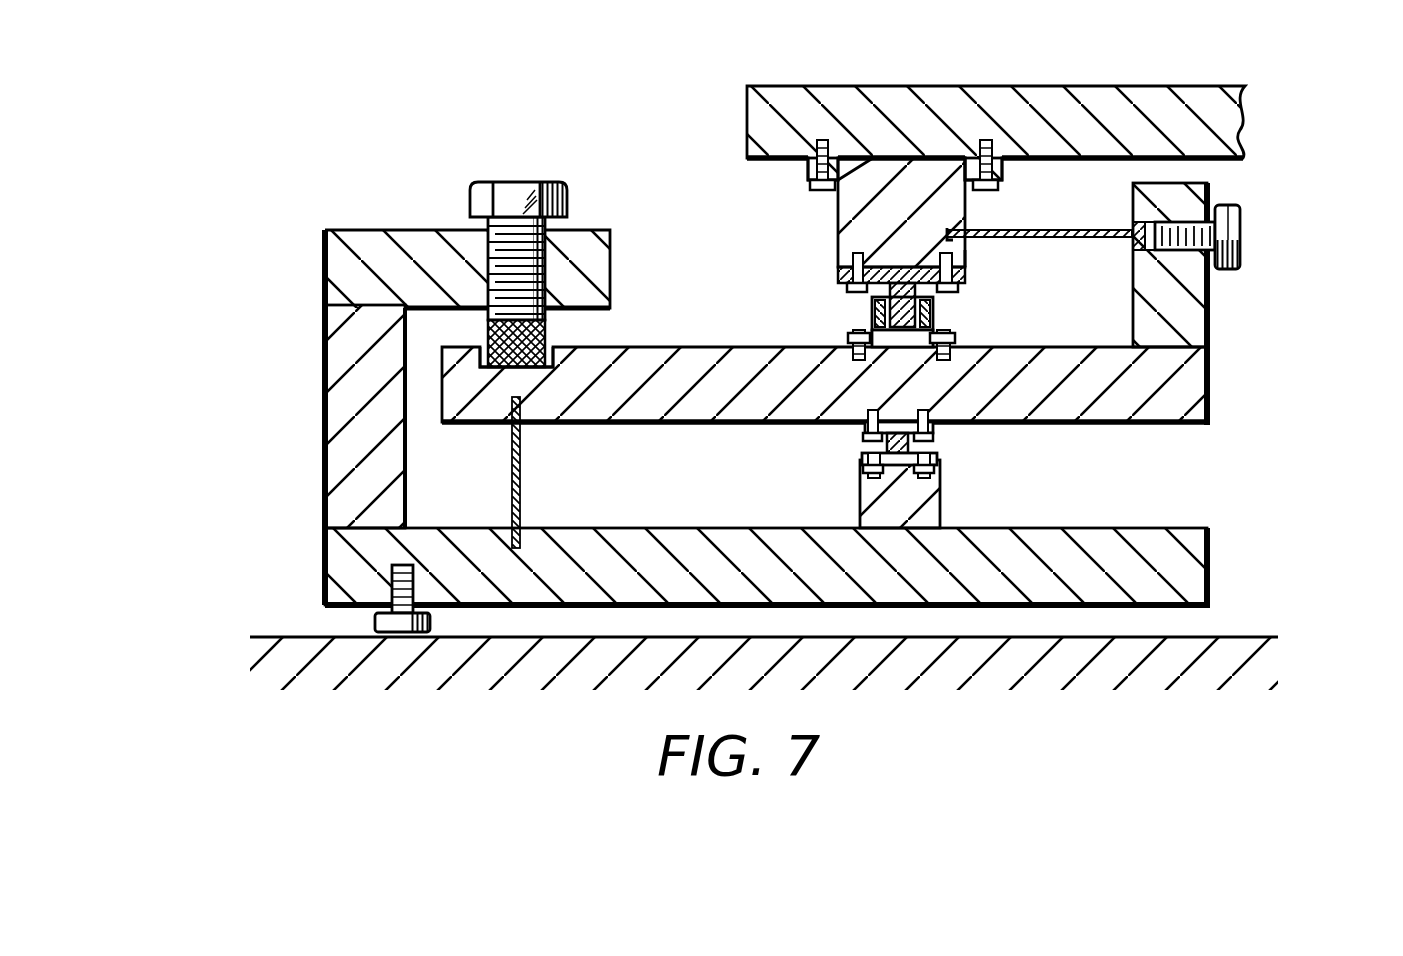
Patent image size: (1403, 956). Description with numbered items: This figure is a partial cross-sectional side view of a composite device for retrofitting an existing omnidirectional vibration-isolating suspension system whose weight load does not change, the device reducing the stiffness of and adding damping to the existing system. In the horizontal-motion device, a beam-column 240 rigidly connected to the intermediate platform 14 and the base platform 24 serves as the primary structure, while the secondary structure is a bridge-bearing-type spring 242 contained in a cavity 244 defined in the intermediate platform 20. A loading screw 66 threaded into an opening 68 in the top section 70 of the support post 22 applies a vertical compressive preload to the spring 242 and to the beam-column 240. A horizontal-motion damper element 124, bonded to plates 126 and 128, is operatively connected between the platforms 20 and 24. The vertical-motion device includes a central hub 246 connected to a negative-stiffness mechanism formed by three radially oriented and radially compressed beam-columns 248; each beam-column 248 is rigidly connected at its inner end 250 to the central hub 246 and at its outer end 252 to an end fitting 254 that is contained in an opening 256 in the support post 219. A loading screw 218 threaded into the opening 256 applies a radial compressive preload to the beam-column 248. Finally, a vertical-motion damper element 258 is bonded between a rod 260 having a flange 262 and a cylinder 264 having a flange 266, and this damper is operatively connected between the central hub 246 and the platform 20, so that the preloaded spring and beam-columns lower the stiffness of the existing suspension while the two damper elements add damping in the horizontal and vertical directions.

The intermediate platform 14 is at (993, 86).
The intermediate platform 20 is at (1145, 425).
The support post 22 is at (325, 337).
The base platform 24 is at (1145, 528).
The loading screw 66 is at (557, 220).
The opening 68 is at (545, 262).
The top section 70 is at (392, 230).
The horizontal-motion damper element 124 is at (935, 447).
The plate 126 is at (863, 430).
The plate 128 is at (858, 468).
The loading screw 218 is at (1228, 268).
The support post 219 is at (1133, 325).
The beam-column 240 is at (595, 468).
The bridge-bearing-type spring 242 is at (553, 338).
The cavity 244 is at (570, 350).
The central hub 246 is at (838, 205).
The beam-column 248 is at (1000, 232).
The inner end 250 is at (966, 258).
The outer end 252 is at (1150, 245).
The end fitting 254 is at (1132, 226).
The opening 256 is at (1150, 237).
The vertical-motion damper element 258 is at (935, 338).
The rod 260 is at (850, 285).
The flange 262 is at (840, 265).
The cylinder 264 is at (875, 300).
The flange 266 is at (853, 348).